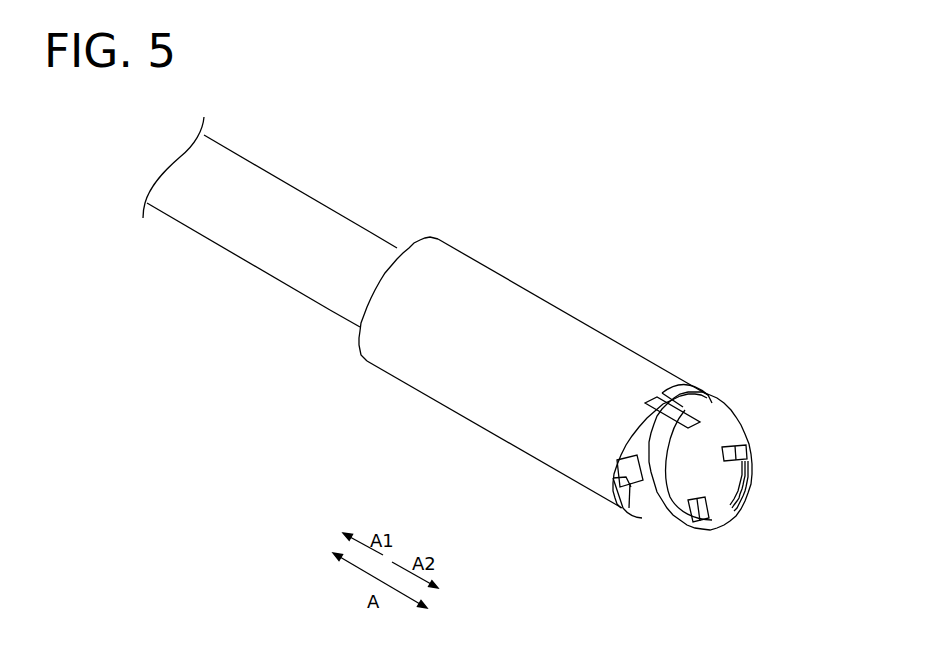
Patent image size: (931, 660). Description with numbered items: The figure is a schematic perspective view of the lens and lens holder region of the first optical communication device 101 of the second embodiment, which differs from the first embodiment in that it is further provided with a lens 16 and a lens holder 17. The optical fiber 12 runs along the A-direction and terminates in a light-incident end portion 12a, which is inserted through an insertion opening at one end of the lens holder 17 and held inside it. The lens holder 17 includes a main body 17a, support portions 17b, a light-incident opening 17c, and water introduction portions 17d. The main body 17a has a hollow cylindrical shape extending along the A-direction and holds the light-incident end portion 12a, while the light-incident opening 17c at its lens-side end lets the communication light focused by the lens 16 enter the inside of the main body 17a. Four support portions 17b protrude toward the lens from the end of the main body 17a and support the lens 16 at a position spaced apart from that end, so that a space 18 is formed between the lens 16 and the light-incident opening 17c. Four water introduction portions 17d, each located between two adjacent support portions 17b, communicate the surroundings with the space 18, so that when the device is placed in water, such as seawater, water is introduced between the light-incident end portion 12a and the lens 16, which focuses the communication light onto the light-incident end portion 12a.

The first optical communication device 101 is at (692, 168).
The optical fiber 12 is at (252, 148).
The light-incident end portion 12a is at (383, 262).
The lens 16 is at (758, 466).
The lens holder 17 is at (474, 253).
The main body 17a is at (543, 322).
The support portion 17b is at (677, 400).
The light-incident opening 17c is at (648, 418).
The water introduction portion 17d is at (710, 398).
The space 18 is at (715, 483).